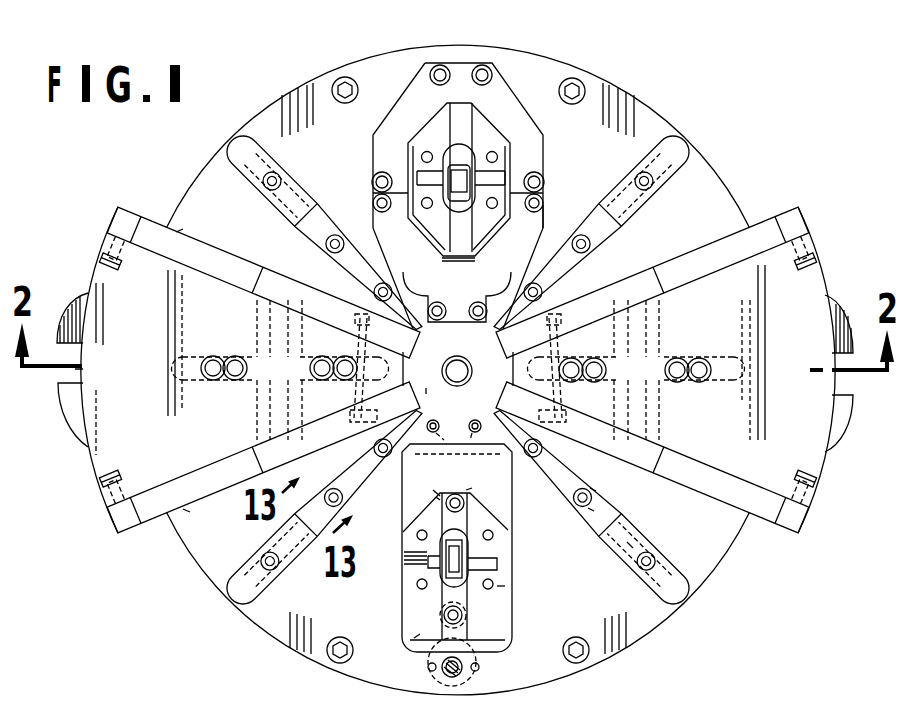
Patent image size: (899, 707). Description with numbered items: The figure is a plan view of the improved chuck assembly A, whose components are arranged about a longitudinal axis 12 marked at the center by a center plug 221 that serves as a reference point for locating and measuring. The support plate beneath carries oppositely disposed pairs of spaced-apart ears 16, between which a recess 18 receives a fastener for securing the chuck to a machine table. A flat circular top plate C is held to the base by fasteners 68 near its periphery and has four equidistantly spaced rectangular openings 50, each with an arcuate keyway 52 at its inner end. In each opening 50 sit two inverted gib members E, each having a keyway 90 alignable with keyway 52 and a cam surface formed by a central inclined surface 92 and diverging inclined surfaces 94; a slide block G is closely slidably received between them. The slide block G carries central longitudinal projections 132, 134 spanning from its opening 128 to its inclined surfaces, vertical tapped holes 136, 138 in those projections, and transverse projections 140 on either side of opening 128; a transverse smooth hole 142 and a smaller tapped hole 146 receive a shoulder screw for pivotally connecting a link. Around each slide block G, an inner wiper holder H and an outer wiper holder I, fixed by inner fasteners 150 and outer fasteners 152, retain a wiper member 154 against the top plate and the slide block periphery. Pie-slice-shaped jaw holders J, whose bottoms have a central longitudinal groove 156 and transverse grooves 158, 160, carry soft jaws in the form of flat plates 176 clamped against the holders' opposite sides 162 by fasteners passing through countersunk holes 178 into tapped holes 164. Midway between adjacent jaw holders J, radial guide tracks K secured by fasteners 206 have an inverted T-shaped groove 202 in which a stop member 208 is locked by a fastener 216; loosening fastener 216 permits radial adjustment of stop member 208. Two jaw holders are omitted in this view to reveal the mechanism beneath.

The chuck assembly A is at (736, 183).
The jaw holder J is at (143, 338).
The ears 16 is at (80, 306).
The recess 18 is at (63, 375).
The opposite sides 162 is at (212, 273).
The tapped holes 164 is at (101, 233).
The flat plates 176 is at (177, 232).
The countersunk holes 178 is at (147, 190).
The guide track K is at (283, 577).
The top plate C is at (656, 527).
The fasteners 206 is at (546, 445).
The groove 202 is at (627, 542).
The fastener 216 is at (590, 488).
The stop member 208 is at (588, 508).
The outer wiper holder I is at (556, 122).
The inner wiper holder H is at (558, 212).
The slide block G is at (488, 128).
The wiper member 154 is at (410, 205).
The rectangular openings 50 is at (507, 157).
The outer group of fasteners 152 is at (440, 64).
The inner group of fasteners 150 is at (374, 203).
The longitudinal axis 12 is at (469, 338).
The center plug 221 is at (440, 371).
The arcuate keyway 52 is at (455, 430).
The gib member E is at (410, 488).
The transverse smooth hole 142 is at (488, 552).
The transverse projections 140 is at (497, 565).
The tapped hole 146 is at (422, 567).
The diverging inclined surfaces 94 is at (455, 493).
The vertical tapped hole 136 is at (466, 506).
The vertical tapped hole 138 is at (466, 614).
The central longitudinal projection 132 is at (438, 500).
The opening 128 is at (498, 586).
The central inclined surface 92 is at (468, 490).
The keyway 90 is at (433, 490).
The central longitudinal projection 134 is at (482, 652).
The transverse groove 158 is at (258, 310).
The transverse groove 160 is at (290, 401).
The central longitudinal groove 156 is at (183, 373).
The fasteners 68 is at (345, 77).